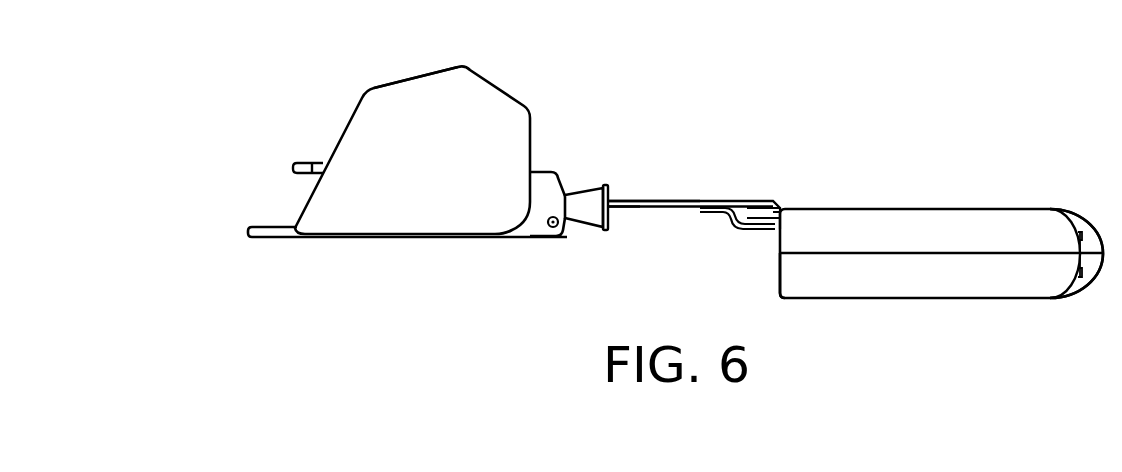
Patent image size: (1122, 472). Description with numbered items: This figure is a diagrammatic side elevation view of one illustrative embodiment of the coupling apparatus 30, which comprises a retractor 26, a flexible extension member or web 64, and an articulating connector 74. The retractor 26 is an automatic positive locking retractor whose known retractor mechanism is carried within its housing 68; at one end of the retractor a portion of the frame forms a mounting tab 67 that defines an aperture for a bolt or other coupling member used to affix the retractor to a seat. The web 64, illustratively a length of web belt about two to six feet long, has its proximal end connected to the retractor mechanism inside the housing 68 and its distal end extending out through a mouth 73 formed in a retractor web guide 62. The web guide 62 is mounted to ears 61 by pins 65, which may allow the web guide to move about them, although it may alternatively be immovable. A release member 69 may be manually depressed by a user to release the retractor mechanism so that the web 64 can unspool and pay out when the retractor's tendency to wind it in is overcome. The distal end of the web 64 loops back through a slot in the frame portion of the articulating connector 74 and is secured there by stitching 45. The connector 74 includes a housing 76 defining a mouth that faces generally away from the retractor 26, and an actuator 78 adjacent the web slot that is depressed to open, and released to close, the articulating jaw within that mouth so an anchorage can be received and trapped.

The retractor 26 is at (411, 91).
The coupling apparatus 30 is at (689, 134).
The stitching 45 is at (707, 201).
The ears 61 is at (543, 178).
The retractor web guide 62 is at (587, 195).
The flexible extension member or web 64 is at (670, 208).
The pins 65 is at (550, 238).
The mounting tab 67 is at (277, 238).
The housing 68 is at (443, 170).
The release member 69 is at (293, 167).
The mouth 73 is at (610, 218).
The articulating connector 74 is at (967, 192).
The housing 76 is at (930, 246).
The actuator 78 is at (776, 268).